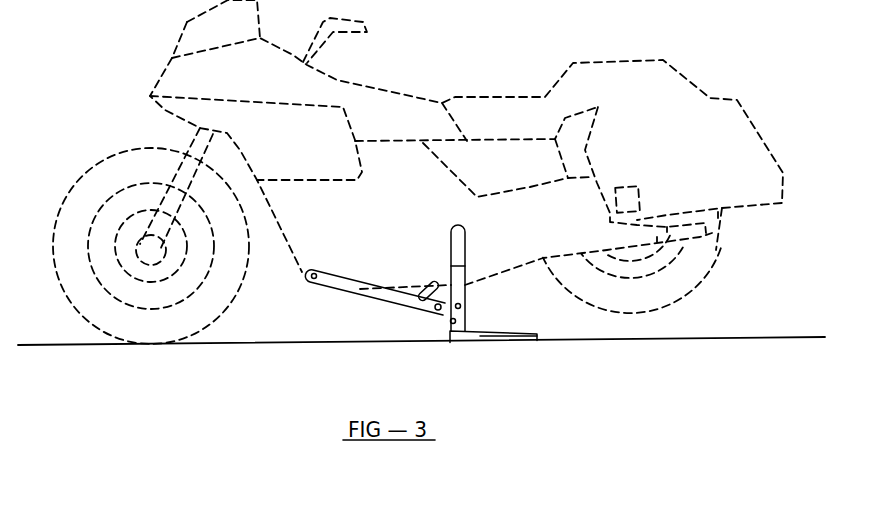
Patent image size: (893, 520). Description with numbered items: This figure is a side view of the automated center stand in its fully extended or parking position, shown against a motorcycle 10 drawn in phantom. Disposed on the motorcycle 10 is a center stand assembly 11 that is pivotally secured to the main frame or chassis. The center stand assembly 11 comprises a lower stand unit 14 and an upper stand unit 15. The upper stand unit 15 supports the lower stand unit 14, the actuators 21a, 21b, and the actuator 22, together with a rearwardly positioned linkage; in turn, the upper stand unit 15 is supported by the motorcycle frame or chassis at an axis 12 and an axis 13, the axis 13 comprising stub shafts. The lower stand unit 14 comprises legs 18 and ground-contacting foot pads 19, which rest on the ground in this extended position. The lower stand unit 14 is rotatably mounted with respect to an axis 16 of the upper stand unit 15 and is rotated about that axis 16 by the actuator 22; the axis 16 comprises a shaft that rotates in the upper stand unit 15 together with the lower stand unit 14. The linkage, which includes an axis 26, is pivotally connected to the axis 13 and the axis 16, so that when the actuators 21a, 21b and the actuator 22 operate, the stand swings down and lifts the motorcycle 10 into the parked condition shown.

The motorcycle 10 is at (478, 88).
The center stand assembly 11 is at (314, 296).
The axis 12 is at (312, 279).
The axis 13 is at (499, 242).
The lower stand unit 14 is at (450, 361).
The upper stand unit 15 is at (377, 278).
The axis 16 is at (446, 313).
The legs 18 is at (450, 319).
The ground-contacting foot pads 19 is at (489, 338).
The actuator 21a is at (404, 262).
The actuator 21b is at (423, 283).
The actuator 22 is at (461, 304).
The axis 26 is at (463, 268).